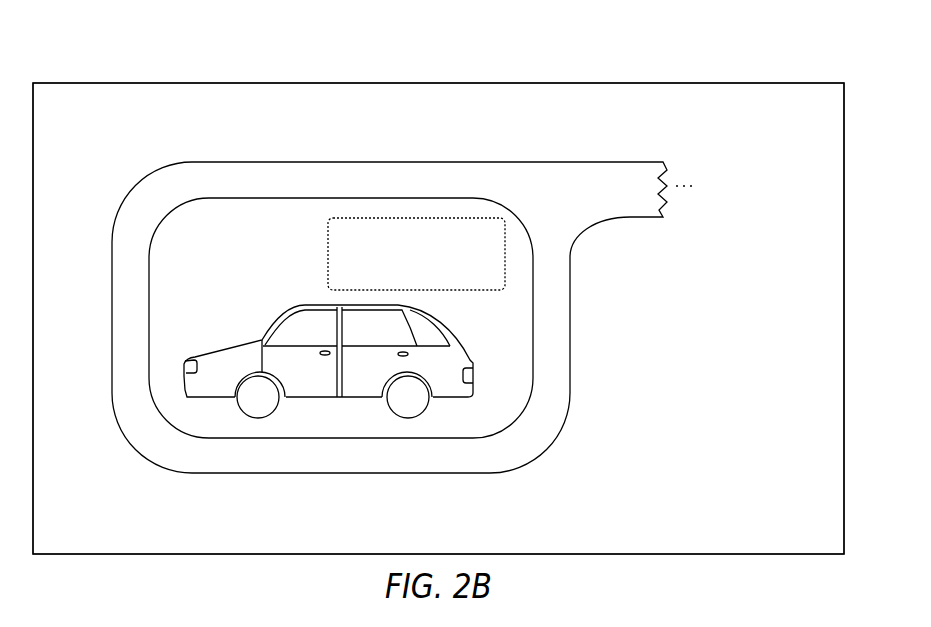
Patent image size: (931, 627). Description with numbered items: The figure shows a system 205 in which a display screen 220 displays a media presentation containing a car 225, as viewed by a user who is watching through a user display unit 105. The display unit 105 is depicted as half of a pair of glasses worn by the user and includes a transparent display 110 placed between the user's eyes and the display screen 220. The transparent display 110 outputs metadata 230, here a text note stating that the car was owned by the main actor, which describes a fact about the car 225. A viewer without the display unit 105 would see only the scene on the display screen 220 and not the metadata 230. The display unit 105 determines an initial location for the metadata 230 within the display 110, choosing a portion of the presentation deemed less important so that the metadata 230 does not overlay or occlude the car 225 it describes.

The system 205 is at (705, 68).
The display screen 220 is at (422, 83).
The user display unit 105 is at (572, 330).
The transparent display 110 is at (514, 216).
The metadata 230 is at (442, 290).
The car 225 is at (340, 397).